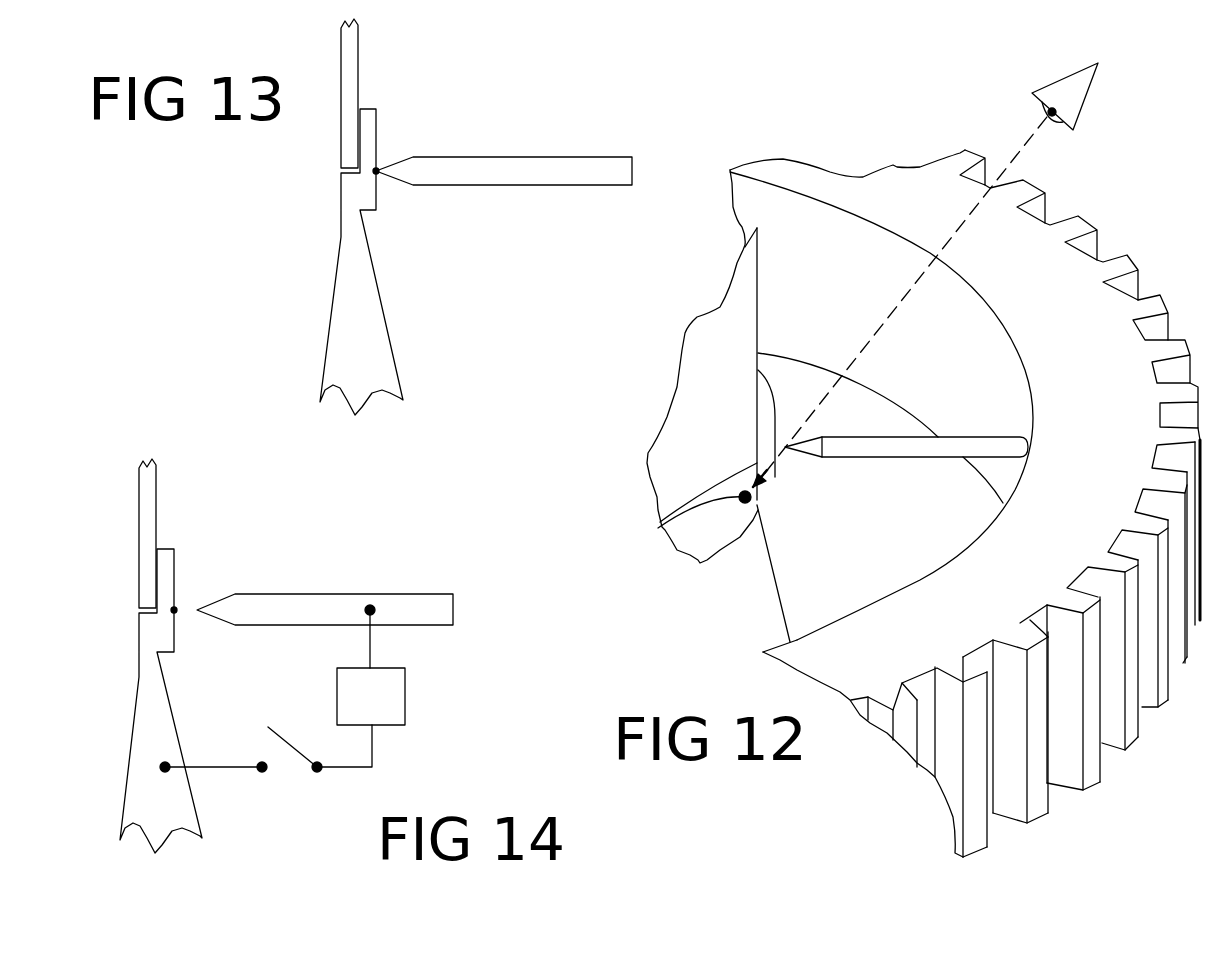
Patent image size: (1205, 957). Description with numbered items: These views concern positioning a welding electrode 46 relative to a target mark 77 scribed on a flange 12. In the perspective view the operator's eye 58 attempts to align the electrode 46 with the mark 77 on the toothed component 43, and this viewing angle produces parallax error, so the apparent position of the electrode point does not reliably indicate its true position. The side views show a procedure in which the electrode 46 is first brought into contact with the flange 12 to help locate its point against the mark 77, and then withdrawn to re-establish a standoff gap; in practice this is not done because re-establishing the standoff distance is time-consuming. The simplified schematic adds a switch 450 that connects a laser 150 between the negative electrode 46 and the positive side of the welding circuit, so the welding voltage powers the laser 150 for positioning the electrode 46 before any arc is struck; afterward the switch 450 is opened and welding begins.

In FIG. 13, the flange 12 is at (376, 205).
In FIG. 12, the gear 43 is at (1103, 492).
In FIG. 13, the electrode 46 is at (482, 155).
In FIG. 14, the electrode 46 is at (280, 593).
In FIG. 12, the electrode 46 is at (873, 437).
In FIG. 12, the eye 58 is at (1087, 100).
In FIG. 13, the mark 77 is at (376, 171).
In FIG. 14, the mark 77 is at (173, 612).
In FIG. 12, the mark 77 is at (745, 503).
In FIG. 14, the laser 150 is at (361, 686).
In FIG. 14, the switch 450 is at (287, 770).